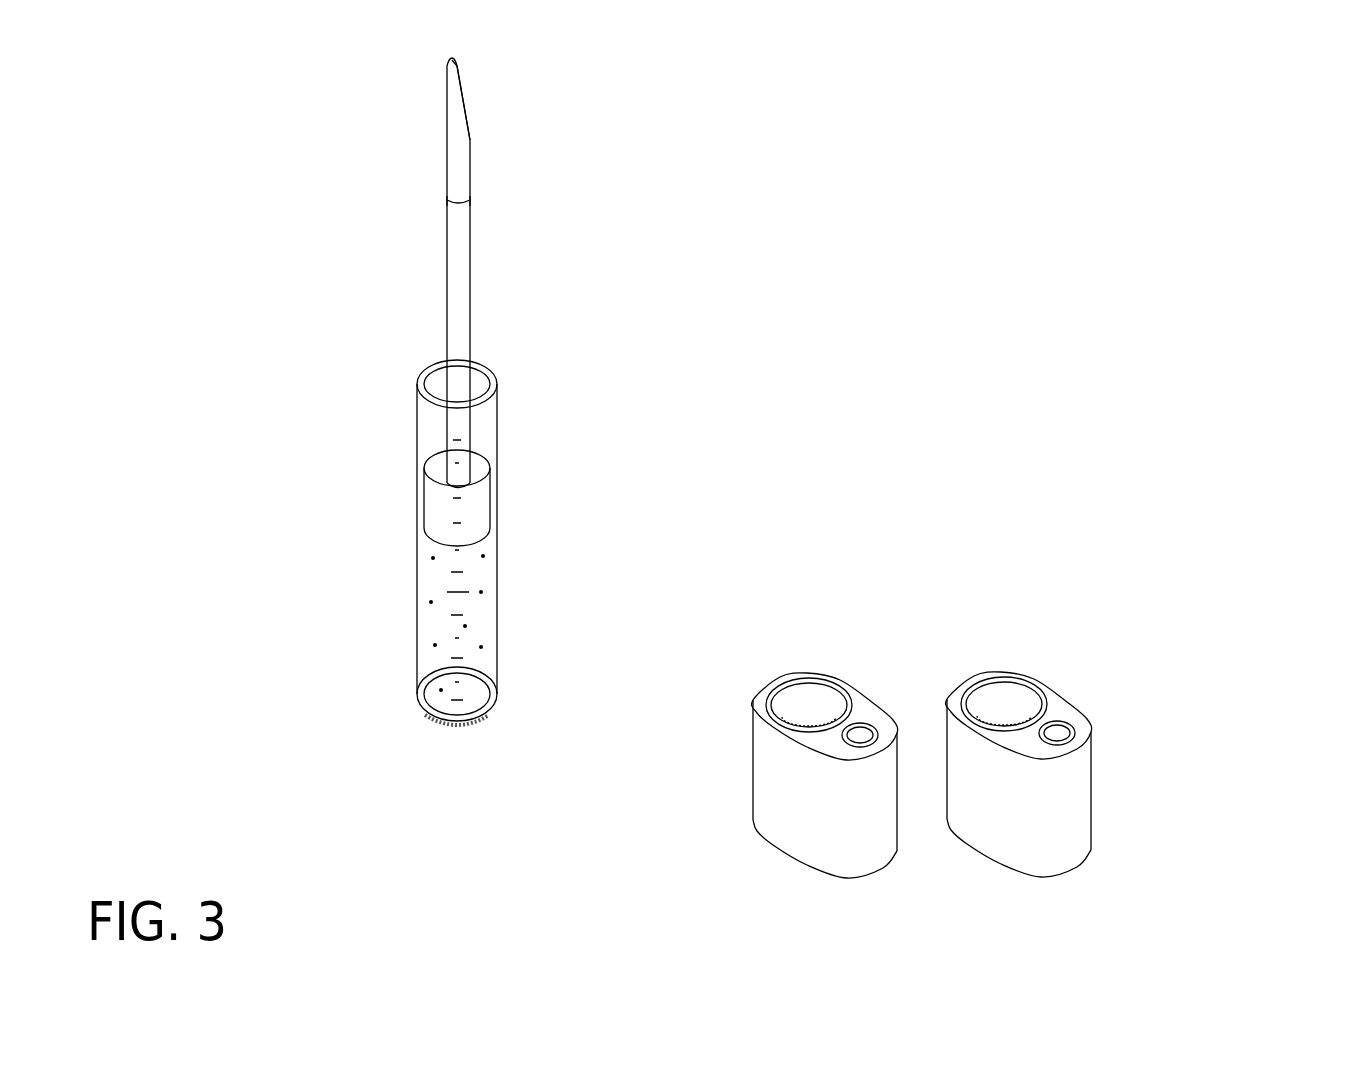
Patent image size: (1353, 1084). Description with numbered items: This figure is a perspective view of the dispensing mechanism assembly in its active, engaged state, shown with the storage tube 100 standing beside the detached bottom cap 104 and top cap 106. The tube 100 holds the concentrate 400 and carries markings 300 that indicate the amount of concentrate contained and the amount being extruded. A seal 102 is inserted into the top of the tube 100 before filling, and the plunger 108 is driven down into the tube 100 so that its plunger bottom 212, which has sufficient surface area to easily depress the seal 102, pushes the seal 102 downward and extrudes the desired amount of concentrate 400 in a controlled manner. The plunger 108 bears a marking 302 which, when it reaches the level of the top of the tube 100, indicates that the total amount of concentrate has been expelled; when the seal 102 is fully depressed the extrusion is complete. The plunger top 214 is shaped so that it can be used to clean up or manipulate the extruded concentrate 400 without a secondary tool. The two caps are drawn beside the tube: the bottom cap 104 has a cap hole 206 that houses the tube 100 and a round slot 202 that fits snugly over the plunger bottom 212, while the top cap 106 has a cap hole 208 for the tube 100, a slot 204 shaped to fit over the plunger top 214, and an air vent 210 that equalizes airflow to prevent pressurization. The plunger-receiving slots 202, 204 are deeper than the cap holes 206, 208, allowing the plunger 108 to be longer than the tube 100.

The collection tube 100 is at (416, 564).
The seal 102 is at (428, 492).
The bottom cap 104 is at (784, 680).
The top cap 106 is at (1130, 681).
The plunger 108 is at (451, 272).
The slot 202 is at (867, 733).
The slot 204 is at (1068, 724).
The cap hole 206 is at (806, 703).
The cap hole 208 is at (1001, 695).
The air vent 210 is at (1015, 723).
The plunger bottom 212 is at (482, 458).
The plunger top 214 is at (472, 140).
The markings 300 is at (448, 620).
The marking 302 is at (472, 200).
The concentrate 400 is at (425, 720).